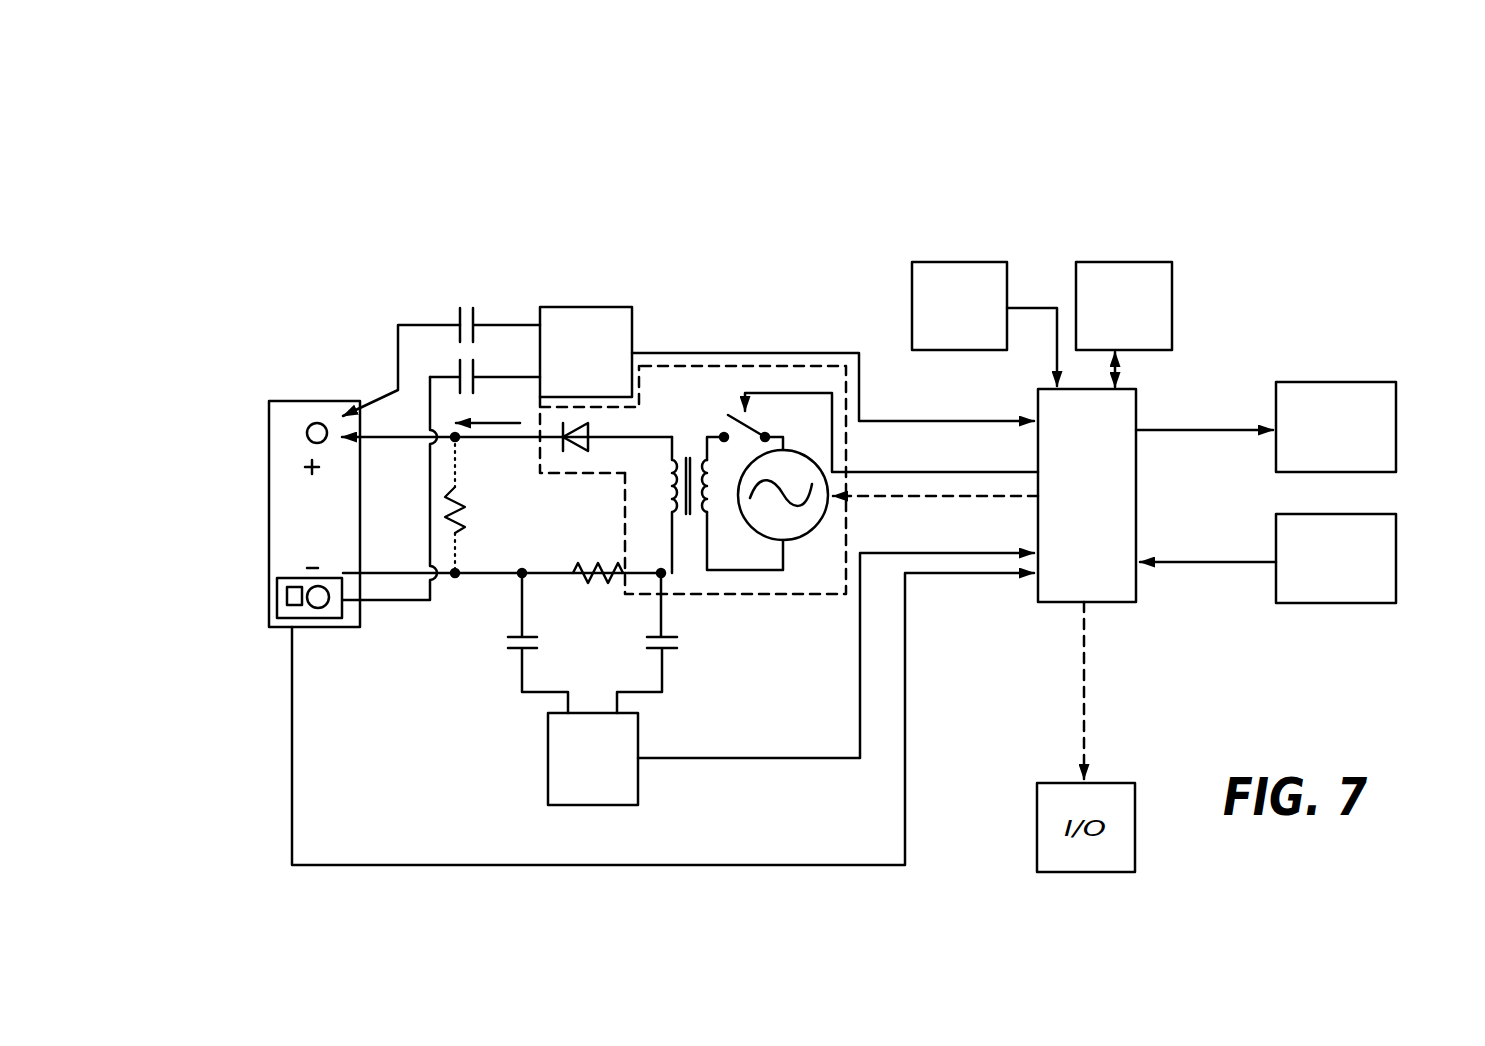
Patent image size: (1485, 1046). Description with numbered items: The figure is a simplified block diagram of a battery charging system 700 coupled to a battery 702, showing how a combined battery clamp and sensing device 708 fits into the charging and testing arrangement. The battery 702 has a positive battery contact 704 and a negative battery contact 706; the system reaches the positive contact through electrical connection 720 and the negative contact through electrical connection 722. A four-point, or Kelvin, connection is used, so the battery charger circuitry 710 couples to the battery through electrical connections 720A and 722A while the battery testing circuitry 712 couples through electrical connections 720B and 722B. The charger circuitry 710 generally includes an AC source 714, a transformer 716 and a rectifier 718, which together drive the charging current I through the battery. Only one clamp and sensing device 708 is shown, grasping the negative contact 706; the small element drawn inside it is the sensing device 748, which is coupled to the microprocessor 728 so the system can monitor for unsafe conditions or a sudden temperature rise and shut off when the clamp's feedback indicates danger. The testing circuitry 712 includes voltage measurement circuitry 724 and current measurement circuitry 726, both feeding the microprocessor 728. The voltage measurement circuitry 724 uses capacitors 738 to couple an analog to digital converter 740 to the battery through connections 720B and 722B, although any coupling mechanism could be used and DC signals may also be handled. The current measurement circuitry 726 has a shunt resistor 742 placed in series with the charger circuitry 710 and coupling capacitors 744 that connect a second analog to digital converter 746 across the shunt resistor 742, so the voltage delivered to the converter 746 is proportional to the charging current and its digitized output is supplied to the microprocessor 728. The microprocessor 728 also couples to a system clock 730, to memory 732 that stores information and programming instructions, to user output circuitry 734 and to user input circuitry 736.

The battery charging system 700 is at (1130, 140).
The battery 702 is at (269, 492).
The positive battery contact 704 is at (309, 424).
The negative battery contact 706 is at (310, 590).
The combined battery clamp and sensing device 708 is at (272, 612).
The terminal contact 748 is at (303, 612).
The battery charger circuitry 710 is at (827, 516).
The battery testing circuitry 712 is at (740, 832).
The AC source 714 is at (817, 518).
The transformer 716 is at (672, 503).
The rectifier 718 is at (570, 453).
The electrical connection 720 is at (452, 407).
The electrical connection 720A is at (341, 443).
The electrical connection 720B is at (339, 416).
The electrical connection 722 is at (502, 547).
The electrical connection 722A is at (345, 573).
The electrical connection 722B is at (346, 602).
The voltage measurement circuitry 724 is at (563, 278).
The current measurement circuitry 726 is at (526, 765).
The microprocessor 728 is at (1113, 603).
The system clock 730 is at (923, 262).
The memory 732 is at (1088, 262).
The user output circuitry 734 is at (1305, 382).
The user input circuitry 736 is at (1397, 582).
The capacitors 738 is at (476, 375).
The analog to digital converter 740 is at (585, 306).
The shunt resistor 742 is at (598, 583).
The coupling capacitors 744 is at (655, 648).
The analog to digital converter 746 is at (640, 790).